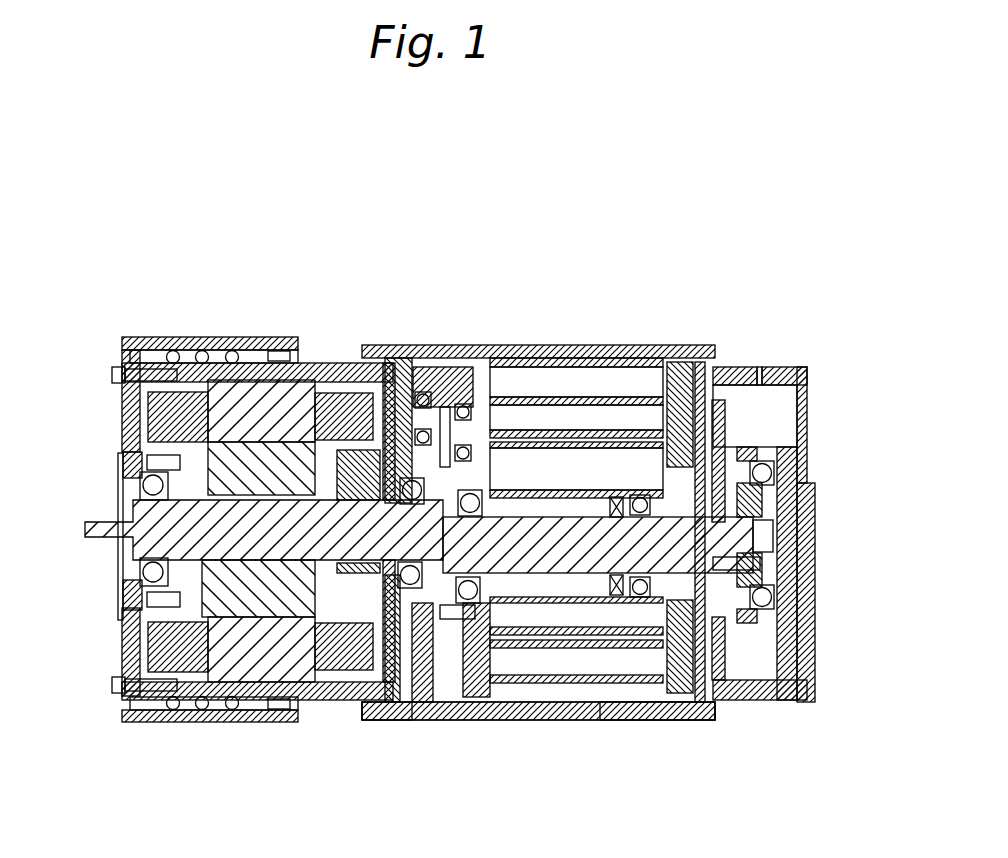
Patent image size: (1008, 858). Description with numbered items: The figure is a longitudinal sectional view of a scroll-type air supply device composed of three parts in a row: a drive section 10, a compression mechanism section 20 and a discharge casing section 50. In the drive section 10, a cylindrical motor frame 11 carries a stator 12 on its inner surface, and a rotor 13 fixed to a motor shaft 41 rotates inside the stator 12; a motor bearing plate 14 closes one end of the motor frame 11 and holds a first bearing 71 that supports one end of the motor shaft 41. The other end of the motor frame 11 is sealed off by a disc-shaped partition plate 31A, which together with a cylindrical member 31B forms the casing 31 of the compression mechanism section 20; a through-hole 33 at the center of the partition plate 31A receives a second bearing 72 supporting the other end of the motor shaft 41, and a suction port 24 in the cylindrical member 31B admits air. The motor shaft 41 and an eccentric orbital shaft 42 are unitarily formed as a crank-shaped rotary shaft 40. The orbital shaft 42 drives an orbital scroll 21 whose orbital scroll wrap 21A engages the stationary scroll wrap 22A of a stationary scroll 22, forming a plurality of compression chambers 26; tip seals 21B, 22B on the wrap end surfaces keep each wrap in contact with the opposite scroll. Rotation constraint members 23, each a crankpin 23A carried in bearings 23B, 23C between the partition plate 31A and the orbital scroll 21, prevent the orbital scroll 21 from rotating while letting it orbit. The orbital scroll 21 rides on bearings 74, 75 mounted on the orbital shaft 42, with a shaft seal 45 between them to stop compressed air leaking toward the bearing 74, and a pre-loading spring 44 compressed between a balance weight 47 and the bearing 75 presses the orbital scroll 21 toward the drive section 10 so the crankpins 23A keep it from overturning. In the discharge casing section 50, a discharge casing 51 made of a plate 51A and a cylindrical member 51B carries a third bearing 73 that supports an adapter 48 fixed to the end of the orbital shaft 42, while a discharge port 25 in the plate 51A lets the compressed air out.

The drive section 10 is at (380, 258).
The motor frame 11 is at (223, 340).
The stator 12 is at (217, 715).
The rotor 13 is at (287, 595).
The motor bearing plate 14 is at (120, 720).
The compression mechanism section 20 is at (710, 258).
The orbital scroll 21 is at (462, 650).
The orbital scroll wrap 21A is at (522, 690).
The tip seal 21B is at (650, 375).
The stationary scroll 22 is at (680, 395).
The stationary scroll wrap 22A is at (575, 395).
The tip seal 22B is at (487, 400).
The rotation constraint member 23 is at (467, 395).
The crankpin 23A is at (455, 380).
The bearing 23B is at (576, 469).
The bearing 23C is at (425, 393).
The suction port 24 is at (545, 358).
The discharge port 25 is at (785, 417).
The compression chamber 26 is at (612, 425).
The casing 31 is at (636, 733).
The partition plate 31A is at (397, 720).
The cylindrical member 31B is at (605, 720).
The through-hole 33 is at (390, 568).
The rotary shaft 40 is at (113, 511).
The motor shaft 41 is at (128, 540).
The orbital shaft 42 is at (545, 552).
The pre-loading spring 44 is at (748, 557).
The shaft seal 45 is at (613, 503).
The balance weight 47 is at (742, 400).
The adapter 48 is at (758, 512).
The discharge casing section 50 is at (713, 258).
The discharge casing 51 is at (812, 362).
The plate 51A is at (808, 482).
The cylindrical member 51B is at (783, 370).
The first bearing 71 is at (125, 463).
The second bearing 72 is at (437, 690).
The third bearing 73 is at (768, 455).
The bearing 74 is at (513, 647).
The bearing 75 is at (640, 500).